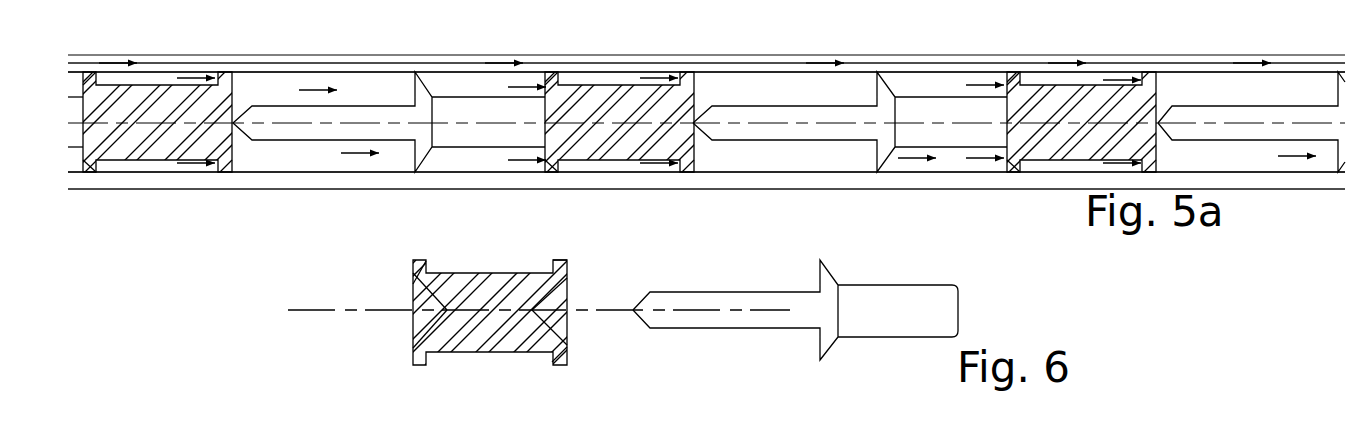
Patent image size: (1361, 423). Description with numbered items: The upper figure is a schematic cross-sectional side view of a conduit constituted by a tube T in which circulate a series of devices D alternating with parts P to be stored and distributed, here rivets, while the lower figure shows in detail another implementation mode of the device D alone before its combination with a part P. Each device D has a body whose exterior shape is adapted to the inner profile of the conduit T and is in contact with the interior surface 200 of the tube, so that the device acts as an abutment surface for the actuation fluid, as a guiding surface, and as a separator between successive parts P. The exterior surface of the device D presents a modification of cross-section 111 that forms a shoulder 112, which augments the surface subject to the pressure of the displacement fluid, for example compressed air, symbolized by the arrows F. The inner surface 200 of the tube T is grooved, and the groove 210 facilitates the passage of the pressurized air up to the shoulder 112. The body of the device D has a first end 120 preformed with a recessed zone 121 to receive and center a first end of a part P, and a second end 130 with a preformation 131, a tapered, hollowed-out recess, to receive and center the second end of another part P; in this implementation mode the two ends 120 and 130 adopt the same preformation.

In FIG. 5A, the tube T is at (706, 99).
In FIG. 5A, the groove 210 is at (706, 48).
In FIG. 5A, the interior surface 200 is at (706, 198).
In FIG. 5A, the device D is at (628, 96).
In FIG. 5A, the part P is at (464, 105).
In FIG. 6, the part P is at (868, 328).
In FIG. 5A, the arrows symbolizing displacement fluid F is at (707, 116).
In FIG. 6, the modification of cross-section 111 is at (461, 392).
In FIG. 6, the shoulder 112 is at (587, 254).
In FIG. 6, the first end 120 is at (568, 345).
In FIG. 6, the recessed zone 121 is at (560, 318).
In FIG. 6, the second end 130 is at (413, 275).
In FIG. 6, the preformation 131 is at (420, 318).